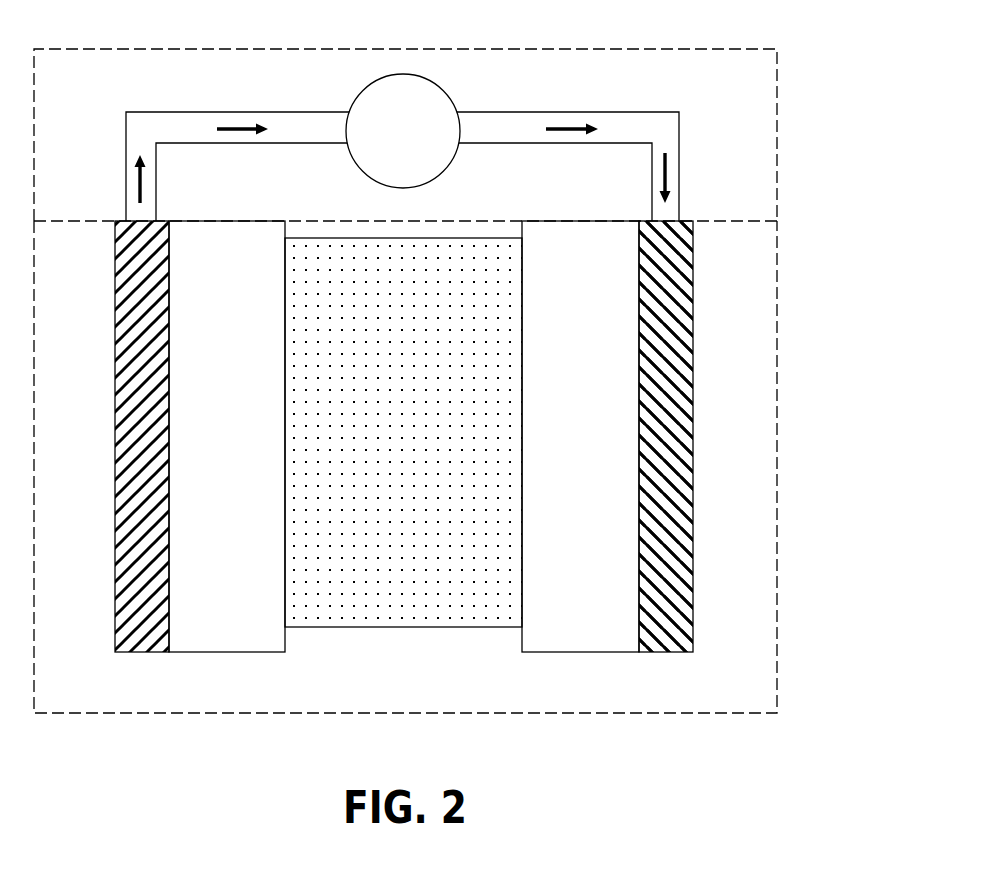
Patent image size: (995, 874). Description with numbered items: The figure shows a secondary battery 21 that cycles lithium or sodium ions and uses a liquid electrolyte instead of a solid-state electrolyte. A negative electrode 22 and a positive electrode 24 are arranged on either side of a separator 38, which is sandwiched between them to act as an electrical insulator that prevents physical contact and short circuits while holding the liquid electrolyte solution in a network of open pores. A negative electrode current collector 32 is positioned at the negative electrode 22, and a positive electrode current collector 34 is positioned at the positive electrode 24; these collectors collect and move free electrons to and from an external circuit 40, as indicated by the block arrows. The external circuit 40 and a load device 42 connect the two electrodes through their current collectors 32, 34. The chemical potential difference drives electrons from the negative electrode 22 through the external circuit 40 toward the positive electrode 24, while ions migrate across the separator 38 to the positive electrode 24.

The secondary battery 21 is at (795, 303).
The negative electrode 22 is at (240, 393).
The positive electrode 24 is at (594, 393).
The negative electrode current collector 32 is at (115, 442).
The positive electrode current collector 34 is at (693, 443).
The separator 38 is at (416, 393).
The external circuit 40 is at (795, 177).
The load device 42 is at (416, 144).